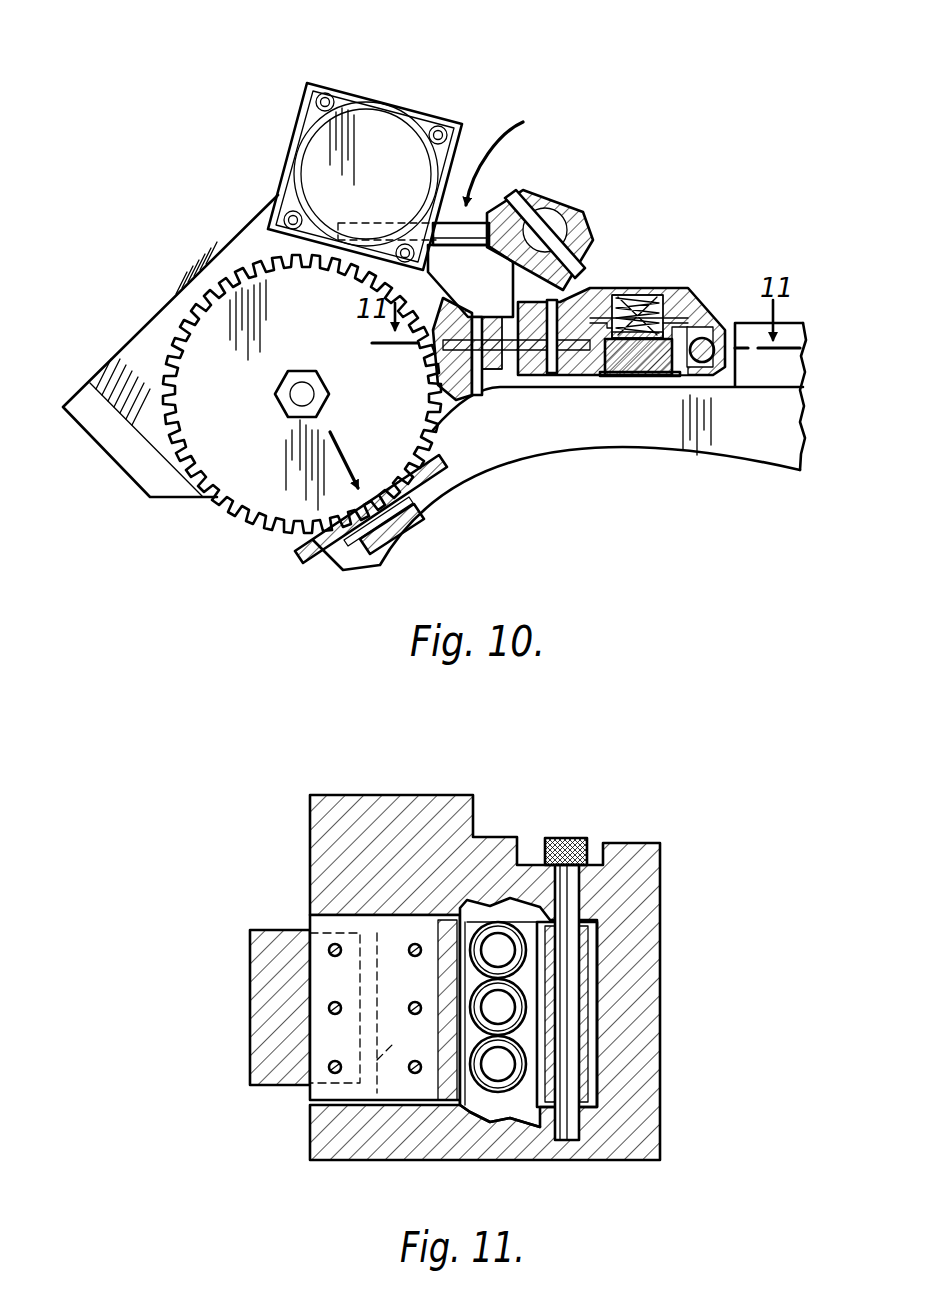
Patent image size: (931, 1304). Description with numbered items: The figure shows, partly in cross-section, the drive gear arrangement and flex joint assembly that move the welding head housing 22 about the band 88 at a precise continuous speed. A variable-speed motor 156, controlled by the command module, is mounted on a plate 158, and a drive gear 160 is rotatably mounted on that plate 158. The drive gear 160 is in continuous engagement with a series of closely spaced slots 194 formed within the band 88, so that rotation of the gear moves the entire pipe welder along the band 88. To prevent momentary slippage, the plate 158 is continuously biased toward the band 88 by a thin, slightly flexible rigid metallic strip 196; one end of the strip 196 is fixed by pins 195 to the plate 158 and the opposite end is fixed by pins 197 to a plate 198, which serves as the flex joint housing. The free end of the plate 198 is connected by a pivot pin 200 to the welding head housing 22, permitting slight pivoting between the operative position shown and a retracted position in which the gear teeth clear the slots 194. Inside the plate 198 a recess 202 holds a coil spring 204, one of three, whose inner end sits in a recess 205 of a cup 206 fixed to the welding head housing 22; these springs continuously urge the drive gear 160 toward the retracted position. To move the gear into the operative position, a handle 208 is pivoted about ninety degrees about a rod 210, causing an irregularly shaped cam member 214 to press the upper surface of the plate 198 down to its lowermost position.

In FIG. 10, the welding head housing 22 is at (800, 332).
In FIG. 11, the welding head housing 22 is at (648, 1098).
In FIG. 10, the band 88 is at (306, 563).
In FIG. 10, the motor 156 is at (387, 122).
In FIG. 10, the plate 158 is at (243, 237).
In FIG. 11, the plate 158 is at (250, 980).
In FIG. 10, the drive gear 160 is at (238, 490).
In FIG. 10, the slots 194 is at (320, 560).
In FIG. 10, the pins 195 is at (476, 322).
In FIG. 11, the pins 195 is at (333, 946).
In FIG. 10, the strip 196 is at (498, 300).
In FIG. 11, the strip 196 is at (310, 1110).
In FIG. 10, the pins 197 is at (553, 320).
In FIG. 11, the pins 197 is at (412, 946).
In FIG. 10, the plate 198 is at (592, 288).
In FIG. 11, the plate 198 is at (580, 1057).
In FIG. 10, the pivot pin 200 is at (707, 345).
In FIG. 11, the pivot pin 200 is at (565, 980).
In FIG. 10, the recess 202 is at (637, 298).
In FIG. 10, the coil spring 204 is at (652, 365).
In FIG. 11, the coil spring 204 is at (520, 948).
In FIG. 10, the recess 205 is at (637, 345).
In FIG. 11, the recess 205 is at (500, 924).
In FIG. 10, the cup 206 is at (672, 376).
In FIG. 11, the cup 206 is at (478, 1115).
In FIG. 10, the handle 208 is at (479, 228).
In FIG. 10, the rod 210 is at (577, 210).
In FIG. 10, the cam member 214 is at (540, 210).